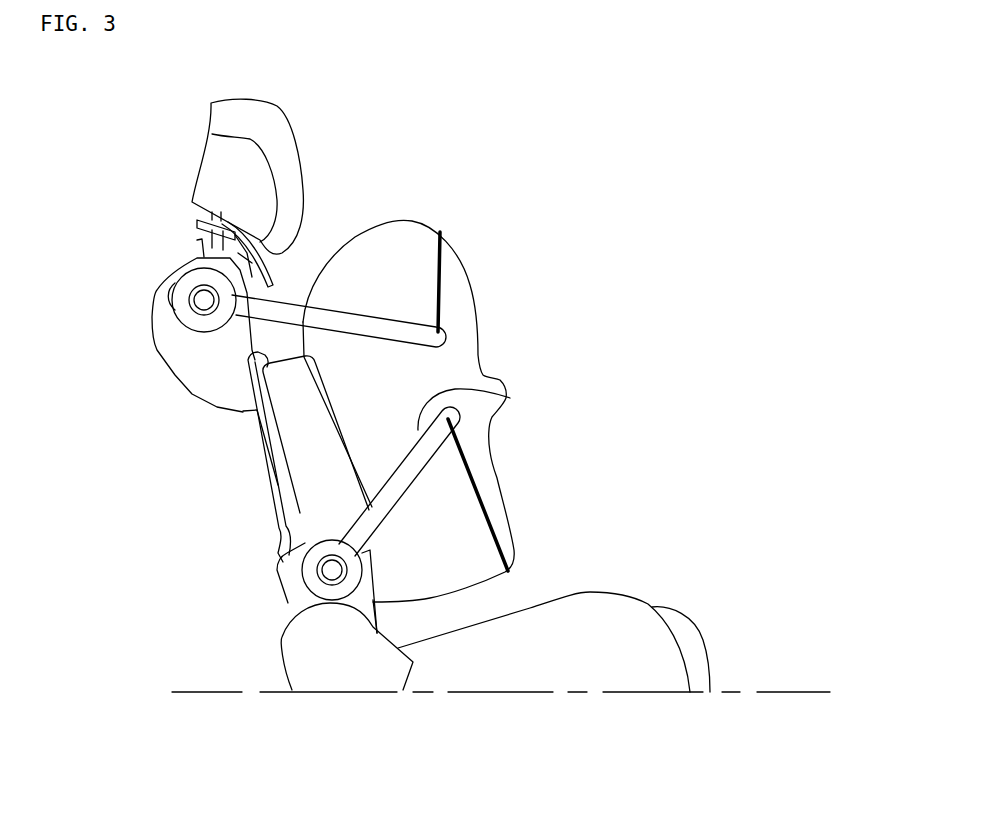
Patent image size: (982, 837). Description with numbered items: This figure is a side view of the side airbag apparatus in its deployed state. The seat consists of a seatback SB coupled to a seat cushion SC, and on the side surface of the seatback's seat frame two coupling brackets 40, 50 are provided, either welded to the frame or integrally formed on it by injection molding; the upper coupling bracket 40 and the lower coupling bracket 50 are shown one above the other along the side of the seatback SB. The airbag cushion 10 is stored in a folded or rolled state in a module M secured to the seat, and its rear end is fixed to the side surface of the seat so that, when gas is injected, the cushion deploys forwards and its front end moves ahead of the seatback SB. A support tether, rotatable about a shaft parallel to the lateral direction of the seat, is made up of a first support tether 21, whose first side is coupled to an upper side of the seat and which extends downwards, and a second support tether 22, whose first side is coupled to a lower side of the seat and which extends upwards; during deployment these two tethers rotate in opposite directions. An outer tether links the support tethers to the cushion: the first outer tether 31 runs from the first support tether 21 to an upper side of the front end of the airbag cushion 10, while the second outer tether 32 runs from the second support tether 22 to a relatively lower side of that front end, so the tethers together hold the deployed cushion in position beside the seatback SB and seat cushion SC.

The airbag cushion 10 is at (377, 236).
The first support tether 21 is at (378, 328).
The second support tether 22 is at (510, 398).
The first outer tether 31 is at (440, 298).
The second outer tether 32 is at (490, 507).
The coupling bracket 40 is at (177, 293).
The coupling bracket 50 is at (300, 570).
The module M is at (308, 472).
The seatback SB is at (190, 368).
The seat cushion SC is at (517, 673).